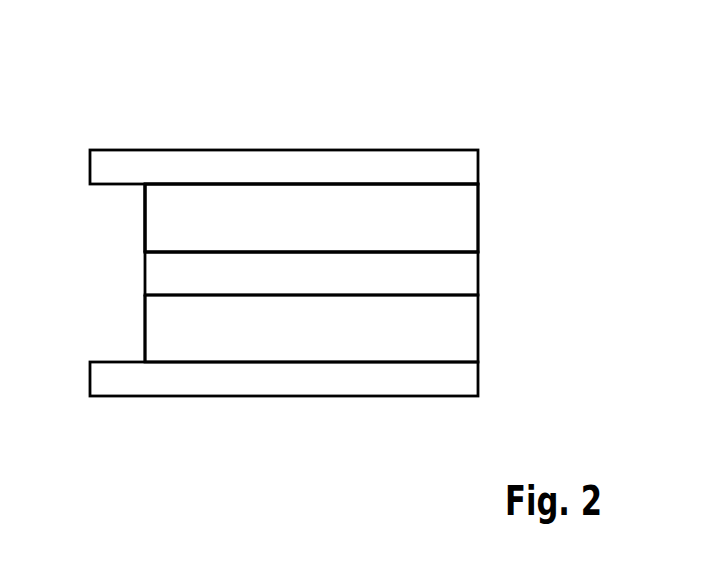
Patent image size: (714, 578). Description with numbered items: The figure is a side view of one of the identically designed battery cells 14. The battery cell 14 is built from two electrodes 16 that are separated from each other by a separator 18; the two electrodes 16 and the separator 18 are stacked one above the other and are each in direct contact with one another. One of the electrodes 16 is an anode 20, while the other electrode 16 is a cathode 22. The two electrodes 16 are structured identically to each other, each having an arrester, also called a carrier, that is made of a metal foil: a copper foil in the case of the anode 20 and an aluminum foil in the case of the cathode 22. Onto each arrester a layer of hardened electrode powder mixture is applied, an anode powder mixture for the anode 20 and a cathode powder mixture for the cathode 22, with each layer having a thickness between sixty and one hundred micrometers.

The battery cell 14 is at (110, 99).
The electrode 16 is at (486, 151).
The separator 18 is at (463, 275).
The anode 20 is at (311, 218).
The cathode 22 is at (486, 293).